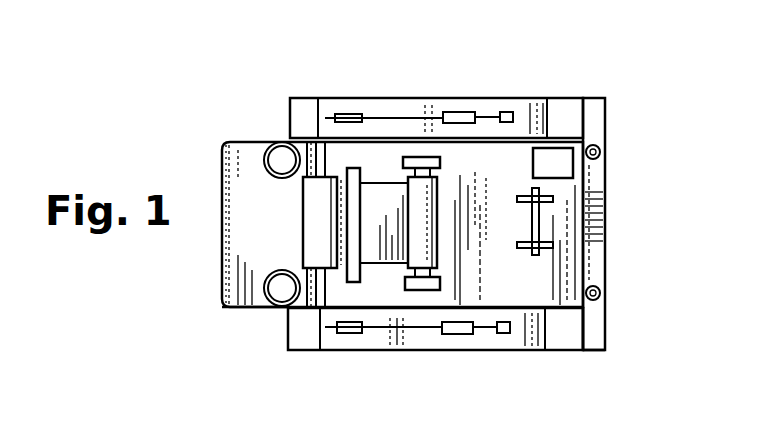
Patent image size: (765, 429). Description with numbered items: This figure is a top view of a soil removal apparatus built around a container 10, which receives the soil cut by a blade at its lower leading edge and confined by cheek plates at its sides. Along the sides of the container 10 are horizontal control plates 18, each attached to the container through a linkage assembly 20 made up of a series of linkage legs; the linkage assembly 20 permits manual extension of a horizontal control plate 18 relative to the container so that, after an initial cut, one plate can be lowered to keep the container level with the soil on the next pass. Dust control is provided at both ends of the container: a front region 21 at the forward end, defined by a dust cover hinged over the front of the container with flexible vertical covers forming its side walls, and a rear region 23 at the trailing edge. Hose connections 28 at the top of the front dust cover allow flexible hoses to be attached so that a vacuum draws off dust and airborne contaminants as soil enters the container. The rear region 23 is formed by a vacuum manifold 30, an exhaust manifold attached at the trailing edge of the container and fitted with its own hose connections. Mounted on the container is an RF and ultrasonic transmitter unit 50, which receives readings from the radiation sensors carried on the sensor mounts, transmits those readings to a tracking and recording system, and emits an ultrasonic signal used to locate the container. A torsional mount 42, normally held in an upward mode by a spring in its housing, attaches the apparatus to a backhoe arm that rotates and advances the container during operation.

The container 10 is at (250, 137).
The horizontal control plates 18 is at (300, 95).
The linkage assembly 20 is at (413, 315).
The front region 21 is at (250, 312).
The rear region 23 is at (603, 223).
The hose connections 28 is at (262, 284).
The vacuum manifold 30 is at (600, 353).
The torsional mount 42 is at (382, 202).
The RF and ultrasonic transmitter unit 50 is at (575, 177).